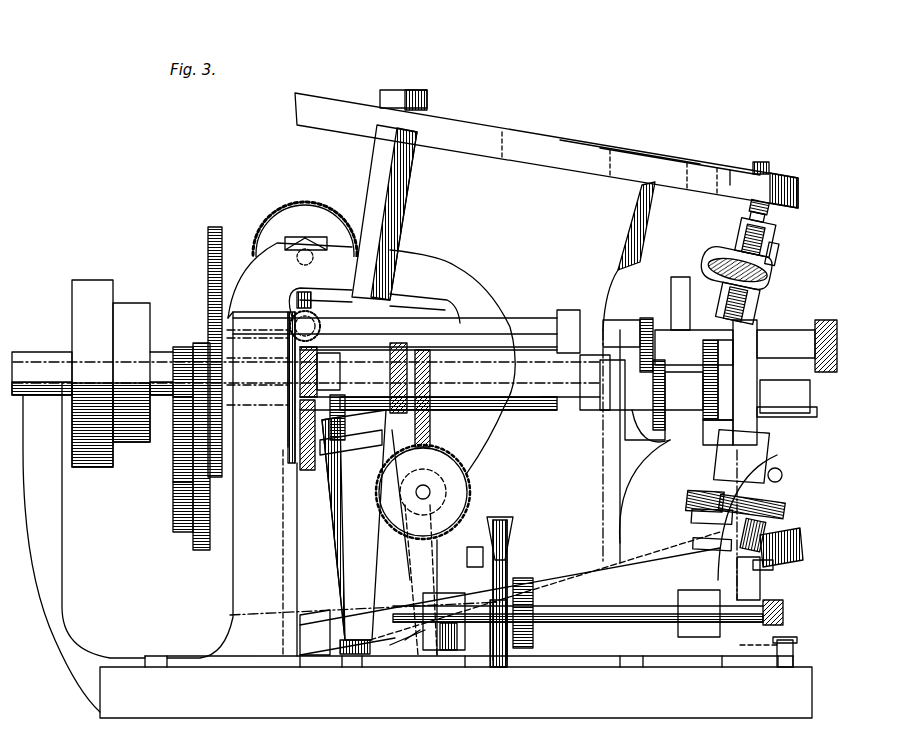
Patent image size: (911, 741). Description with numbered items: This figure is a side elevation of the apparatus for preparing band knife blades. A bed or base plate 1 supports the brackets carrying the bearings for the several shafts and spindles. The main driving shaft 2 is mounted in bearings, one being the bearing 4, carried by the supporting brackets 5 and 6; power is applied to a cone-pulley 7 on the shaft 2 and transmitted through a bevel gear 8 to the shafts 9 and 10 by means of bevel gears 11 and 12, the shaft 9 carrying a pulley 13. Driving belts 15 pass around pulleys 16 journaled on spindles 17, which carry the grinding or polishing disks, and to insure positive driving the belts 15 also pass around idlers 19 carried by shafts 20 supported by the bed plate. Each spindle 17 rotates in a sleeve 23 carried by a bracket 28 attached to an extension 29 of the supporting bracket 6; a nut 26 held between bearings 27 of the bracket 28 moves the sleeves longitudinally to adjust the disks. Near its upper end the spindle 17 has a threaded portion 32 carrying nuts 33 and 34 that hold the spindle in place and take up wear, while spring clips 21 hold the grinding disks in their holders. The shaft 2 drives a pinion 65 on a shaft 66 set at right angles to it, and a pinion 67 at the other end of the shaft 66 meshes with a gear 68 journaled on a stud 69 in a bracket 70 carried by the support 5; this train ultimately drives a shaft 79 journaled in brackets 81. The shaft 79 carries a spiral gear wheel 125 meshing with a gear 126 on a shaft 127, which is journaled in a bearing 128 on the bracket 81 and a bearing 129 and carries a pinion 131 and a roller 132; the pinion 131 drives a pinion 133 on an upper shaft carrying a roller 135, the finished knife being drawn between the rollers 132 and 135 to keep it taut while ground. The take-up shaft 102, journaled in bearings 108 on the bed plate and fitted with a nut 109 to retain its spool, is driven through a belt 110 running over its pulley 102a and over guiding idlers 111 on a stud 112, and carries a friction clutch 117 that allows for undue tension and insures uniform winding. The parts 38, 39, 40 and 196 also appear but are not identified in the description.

The bed or base plate 1 is at (456, 687).
The main driving shaft 2 is at (32, 370).
The bearing 4 is at (579, 382).
The supporting bracket 5 is at (203, 550).
The supporting bracket 6 is at (668, 510).
The cone-pulley 7 is at (111, 373).
The bevel gear 8 is at (445, 347).
The shaft 9 is at (405, 90).
The shaft 10 is at (405, 642).
The bevel gear 11 is at (383, 343).
The bevel gear 12 is at (316, 616).
The pulley 13 is at (462, 132).
The driving belts 15 is at (570, 579).
The pulleys 16 is at (728, 170).
The spindles or shafts 17 is at (765, 170).
The idlers 19 is at (643, 160).
The shafts or spindles 20 is at (630, 233).
The spring clips 21 is at (737, 504).
The sleeves 23 is at (740, 223).
The nut 26 is at (747, 268).
The bearings 27 is at (790, 468).
The bracket 28 is at (671, 290).
The extension 29 is at (607, 374).
The threaded portions 32 is at (812, 543).
The nut 33 is at (768, 205).
The nut 34 is at (766, 216).
The gear 38 is at (185, 347).
The gear 39 is at (173, 505).
The gear 40 is at (173, 453).
The pinion 65 is at (292, 323).
The shaft 66 is at (295, 340).
The pinion 67 is at (290, 332).
The gear 68 is at (311, 206).
The stud 69 is at (313, 257).
The bracket 70 is at (305, 238).
The shaft 79 is at (430, 492).
The brackets 81 is at (379, 532).
The shaft 102 is at (590, 616).
The pulley 102a is at (490, 650).
The bearings 108 is at (571, 620).
The nuts 109 is at (783, 612).
The belt 110 is at (505, 540).
The guiding idlers 111 is at (496, 525).
The stud 112 is at (467, 558).
The friction clutch 117 is at (535, 590).
The spiral gear wheel 125 is at (466, 485).
The gear 126 is at (432, 440).
The shaft 127 is at (550, 402).
The bearing 128 is at (693, 385).
The bearing 129 is at (790, 330).
The pinion 131 is at (660, 425).
The roller 132 is at (718, 408).
The pinion 133 is at (645, 320).
The roller 135 is at (708, 382).
The bolt 196 is at (757, 668).